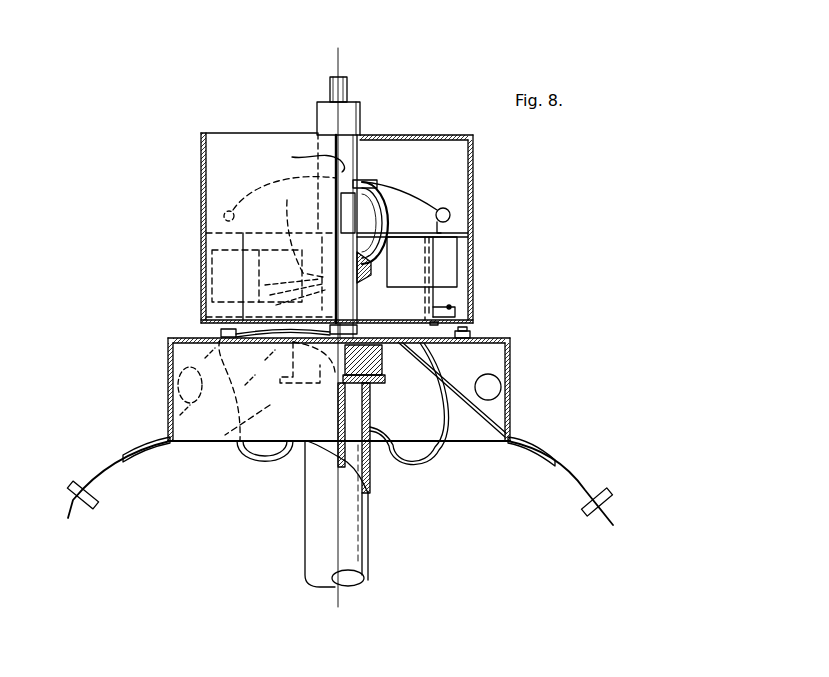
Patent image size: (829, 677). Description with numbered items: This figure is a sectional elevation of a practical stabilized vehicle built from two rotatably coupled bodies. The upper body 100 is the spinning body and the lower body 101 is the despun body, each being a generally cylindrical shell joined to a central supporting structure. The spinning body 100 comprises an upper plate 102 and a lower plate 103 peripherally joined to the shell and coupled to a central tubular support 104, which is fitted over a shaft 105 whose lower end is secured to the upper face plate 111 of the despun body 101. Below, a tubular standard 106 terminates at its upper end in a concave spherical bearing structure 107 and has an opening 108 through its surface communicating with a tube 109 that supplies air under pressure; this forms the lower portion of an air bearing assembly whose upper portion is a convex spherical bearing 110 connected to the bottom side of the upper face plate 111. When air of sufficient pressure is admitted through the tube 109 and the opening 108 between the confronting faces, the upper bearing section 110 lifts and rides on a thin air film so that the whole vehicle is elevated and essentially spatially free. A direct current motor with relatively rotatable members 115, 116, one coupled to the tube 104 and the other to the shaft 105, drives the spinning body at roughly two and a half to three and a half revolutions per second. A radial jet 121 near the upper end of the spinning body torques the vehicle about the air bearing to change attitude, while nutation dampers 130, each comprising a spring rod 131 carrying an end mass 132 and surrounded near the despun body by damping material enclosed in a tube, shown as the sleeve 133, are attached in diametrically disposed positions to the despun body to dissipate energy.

The upper body 100 is at (472, 178).
The lower body 101 is at (465, 438).
The upper plate 102 is at (403, 135).
The lower plate 103 is at (463, 317).
The central tubular support 104 is at (355, 118).
The shaft 105 is at (347, 84).
The tubular standard 106 is at (348, 542).
The concave spherical bearing structure 107 is at (385, 377).
The opening 108 is at (337, 375).
The tube 109 is at (343, 428).
The convex spherical bearing 110 is at (363, 361).
The upper face plate 111 is at (497, 338).
The relatively rotatable motor member 115 is at (355, 203).
The relatively rotatable motor member 116 is at (353, 227).
The radial jet 121 is at (284, 184).
The nutation damper 130 is at (98, 476).
The spring rod 131 is at (110, 462).
The mass 132 is at (92, 510).
The sleeve 133 is at (152, 438).